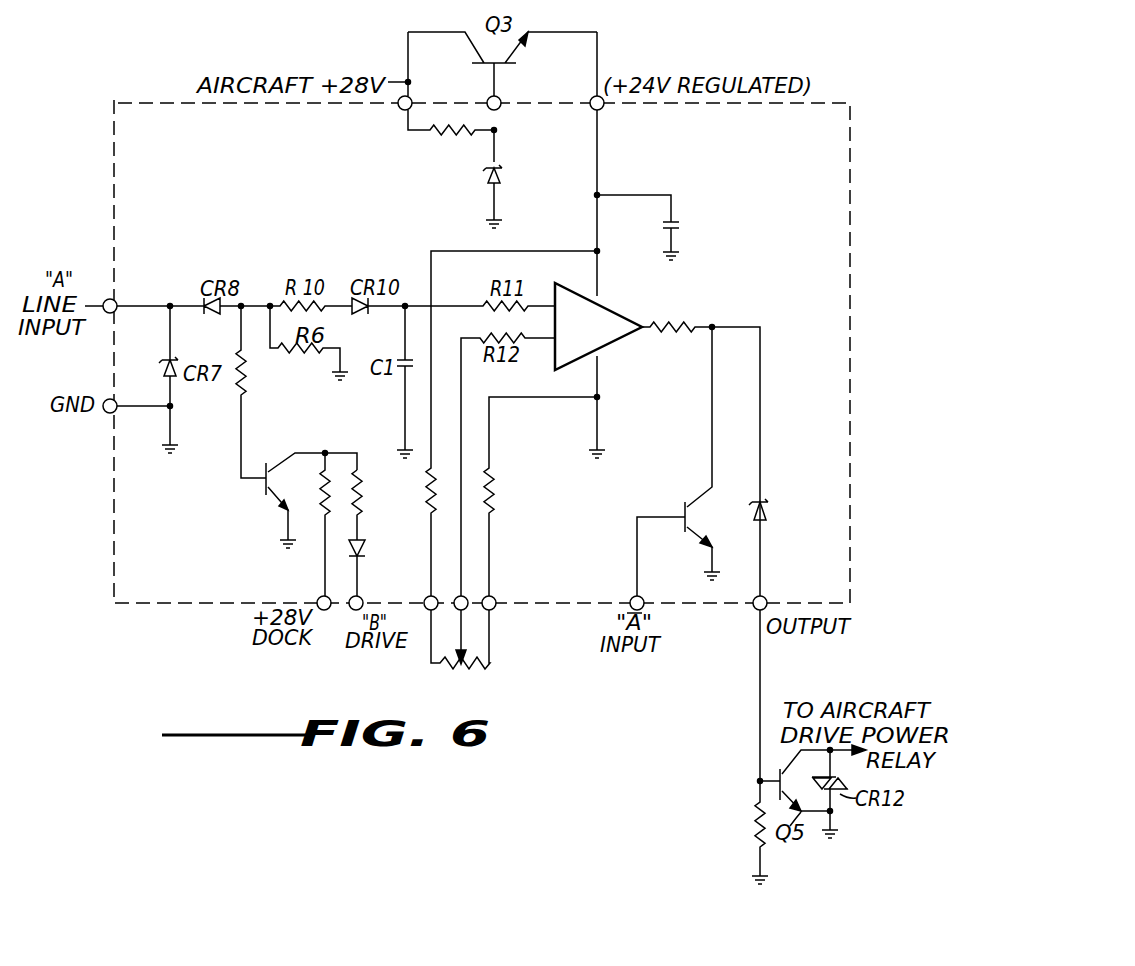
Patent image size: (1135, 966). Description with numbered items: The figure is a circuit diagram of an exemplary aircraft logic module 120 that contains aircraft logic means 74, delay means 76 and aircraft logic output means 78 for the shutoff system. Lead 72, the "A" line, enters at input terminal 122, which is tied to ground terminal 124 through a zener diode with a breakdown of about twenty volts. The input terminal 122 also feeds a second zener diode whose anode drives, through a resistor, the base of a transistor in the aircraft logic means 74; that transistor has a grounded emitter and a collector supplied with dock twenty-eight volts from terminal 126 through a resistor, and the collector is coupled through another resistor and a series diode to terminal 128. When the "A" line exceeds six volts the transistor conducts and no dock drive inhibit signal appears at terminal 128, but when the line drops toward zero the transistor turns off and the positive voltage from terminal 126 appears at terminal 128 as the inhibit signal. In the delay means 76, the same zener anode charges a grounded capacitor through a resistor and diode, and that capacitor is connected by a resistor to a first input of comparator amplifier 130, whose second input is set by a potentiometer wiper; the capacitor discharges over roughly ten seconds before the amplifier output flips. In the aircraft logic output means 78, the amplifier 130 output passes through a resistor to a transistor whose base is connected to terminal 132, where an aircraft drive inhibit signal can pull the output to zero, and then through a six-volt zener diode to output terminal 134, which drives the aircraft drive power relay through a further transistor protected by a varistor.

The aircraft logic module 120 is at (112, 135).
The lead 72 is at (110, 298).
The input terminal 122 is at (117, 300).
The ground terminal 124 is at (105, 418).
The terminal 126 is at (318, 598).
The terminal 128 is at (363, 600).
The comparator amplifier 130 is at (616, 316).
The terminal 132 is at (631, 599).
The output terminal 134 is at (768, 605).
The aircraft logic means 74 is at (205, 509).
The delay means 76 is at (540, 497).
The aircraft logic output means 78 is at (742, 305).